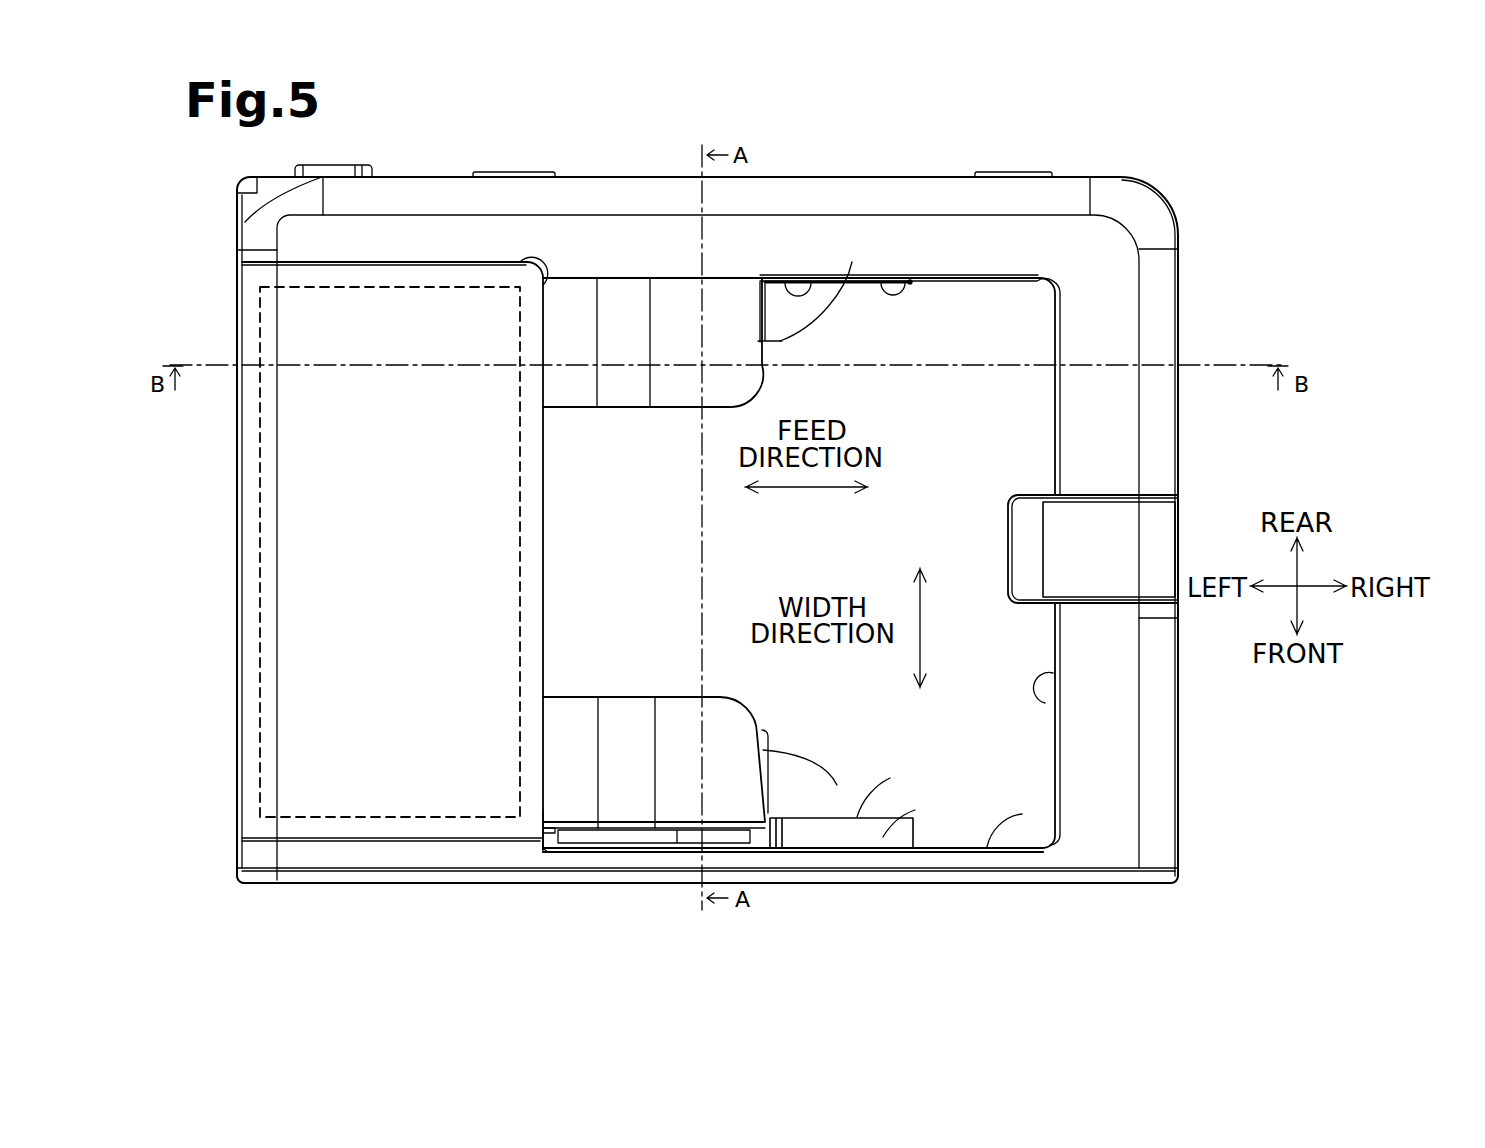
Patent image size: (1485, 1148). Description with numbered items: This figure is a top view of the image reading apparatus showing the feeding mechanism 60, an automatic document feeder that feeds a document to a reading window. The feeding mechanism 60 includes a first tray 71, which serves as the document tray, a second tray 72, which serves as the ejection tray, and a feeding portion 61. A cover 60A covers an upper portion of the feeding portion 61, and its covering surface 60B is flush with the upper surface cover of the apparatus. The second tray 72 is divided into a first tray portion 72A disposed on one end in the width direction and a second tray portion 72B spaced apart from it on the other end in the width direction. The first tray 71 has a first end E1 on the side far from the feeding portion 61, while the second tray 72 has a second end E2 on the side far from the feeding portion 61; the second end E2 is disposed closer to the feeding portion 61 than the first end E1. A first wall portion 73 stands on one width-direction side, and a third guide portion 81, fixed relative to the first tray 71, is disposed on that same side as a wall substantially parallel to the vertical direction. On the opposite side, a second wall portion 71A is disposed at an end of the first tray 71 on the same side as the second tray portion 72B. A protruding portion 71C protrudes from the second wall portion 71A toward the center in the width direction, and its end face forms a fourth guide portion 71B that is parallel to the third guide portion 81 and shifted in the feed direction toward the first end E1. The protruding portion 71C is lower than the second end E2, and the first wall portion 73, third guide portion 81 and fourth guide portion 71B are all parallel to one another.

The feeding mechanism 60 is at (233, 313).
The cover 60A is at (297, 278).
The covering surface 60B is at (527, 276).
The feeding portion 61 is at (256, 603).
The first tray 71 is at (1002, 333).
The second wall portion 71A is at (1022, 814).
The fourth guide portion 71B is at (890, 778).
The protruding portion 71C is at (915, 810).
The second tray 72 is at (712, 527).
The first tray portion 72A is at (725, 303).
The second tray portion 72B is at (725, 803).
The first wall portion 73 is at (910, 282).
The third guide portion 81 is at (817, 282).
The first end E1 is at (1045, 703).
The second end E2 is at (852, 262).